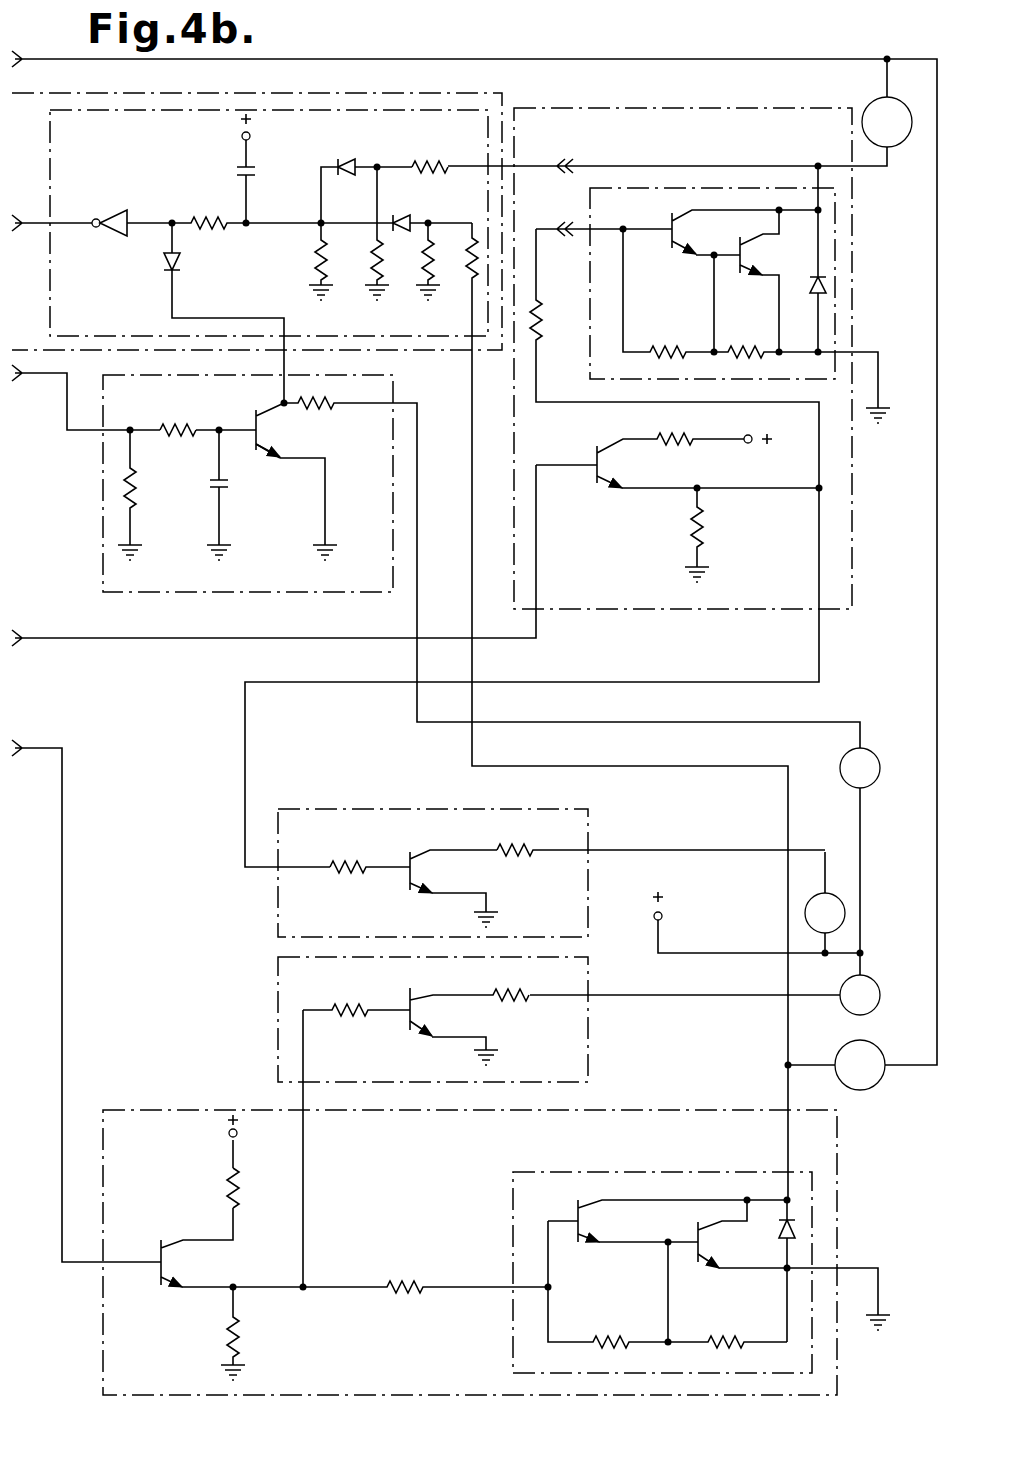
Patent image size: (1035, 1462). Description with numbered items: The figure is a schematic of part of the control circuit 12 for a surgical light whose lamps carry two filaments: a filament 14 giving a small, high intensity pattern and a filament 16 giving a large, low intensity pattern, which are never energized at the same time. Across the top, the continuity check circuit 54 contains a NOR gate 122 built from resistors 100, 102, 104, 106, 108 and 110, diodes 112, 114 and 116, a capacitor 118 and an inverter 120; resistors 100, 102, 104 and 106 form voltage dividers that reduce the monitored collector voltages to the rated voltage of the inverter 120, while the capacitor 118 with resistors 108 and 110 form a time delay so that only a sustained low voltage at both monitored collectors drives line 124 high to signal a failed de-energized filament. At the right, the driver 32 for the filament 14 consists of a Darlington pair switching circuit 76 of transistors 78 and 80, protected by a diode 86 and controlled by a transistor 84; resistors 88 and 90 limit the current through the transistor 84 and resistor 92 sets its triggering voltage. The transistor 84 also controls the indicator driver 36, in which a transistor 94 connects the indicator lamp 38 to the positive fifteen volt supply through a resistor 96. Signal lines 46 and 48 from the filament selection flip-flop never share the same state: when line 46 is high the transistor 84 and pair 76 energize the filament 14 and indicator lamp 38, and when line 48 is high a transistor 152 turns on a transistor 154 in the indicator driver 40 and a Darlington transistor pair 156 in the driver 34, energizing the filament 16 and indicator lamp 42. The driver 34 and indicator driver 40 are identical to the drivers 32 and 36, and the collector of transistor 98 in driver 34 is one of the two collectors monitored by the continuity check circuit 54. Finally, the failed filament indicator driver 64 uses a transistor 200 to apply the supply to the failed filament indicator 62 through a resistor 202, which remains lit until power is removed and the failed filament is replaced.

The control circuit 12 is at (195, 831).
The filament 14 is at (873, 107).
The filament 16 is at (875, 1088).
The driver 32 is at (625, 609).
The driver 34 is at (190, 1110).
The indicator driver 36 is at (378, 809).
The indicator lamp 38 is at (847, 915).
The indicator driver 40 is at (278, 1003).
The indicator lamp 42 is at (872, 983).
The line 46 is at (55, 640).
The line 48 is at (55, 748).
The continuity check circuit 54 is at (430, 93).
The indicator 62 is at (870, 755).
The indicator driver 64 is at (103, 513).
The Darlington pair switching circuit 76 is at (590, 195).
The transistor 78 is at (670, 222).
The transistor 80 is at (742, 268).
The transistor 84 is at (596, 455).
The diode 86 is at (812, 280).
The resistor 88 is at (570, 272).
The resistor 90 is at (352, 862).
The resistor 92 is at (700, 520).
The transistor 94 is at (408, 885).
The resistor 96 is at (510, 845).
The transistor 98 is at (720, 1268).
The resistor 100 is at (438, 162).
The resistor 102 is at (482, 203).
The resistor 104 is at (436, 280).
The resistor 106 is at (372, 286).
The resistor 108 is at (217, 214).
The resistor 110 is at (318, 245).
The diode 112 is at (412, 193).
The diode 114 is at (338, 161).
The diode 116 is at (163, 255).
The capacitor 118 is at (235, 167).
The inverter 120 is at (113, 212).
The NOR gate 122 is at (52, 316).
The line 124 is at (35, 222).
The transistor 152 is at (165, 1238).
The transistor 154 is at (405, 1000).
The Darlington transistor pair 156 is at (512, 1222).
The transistor 200 is at (254, 418).
The resistor 202 is at (318, 412).